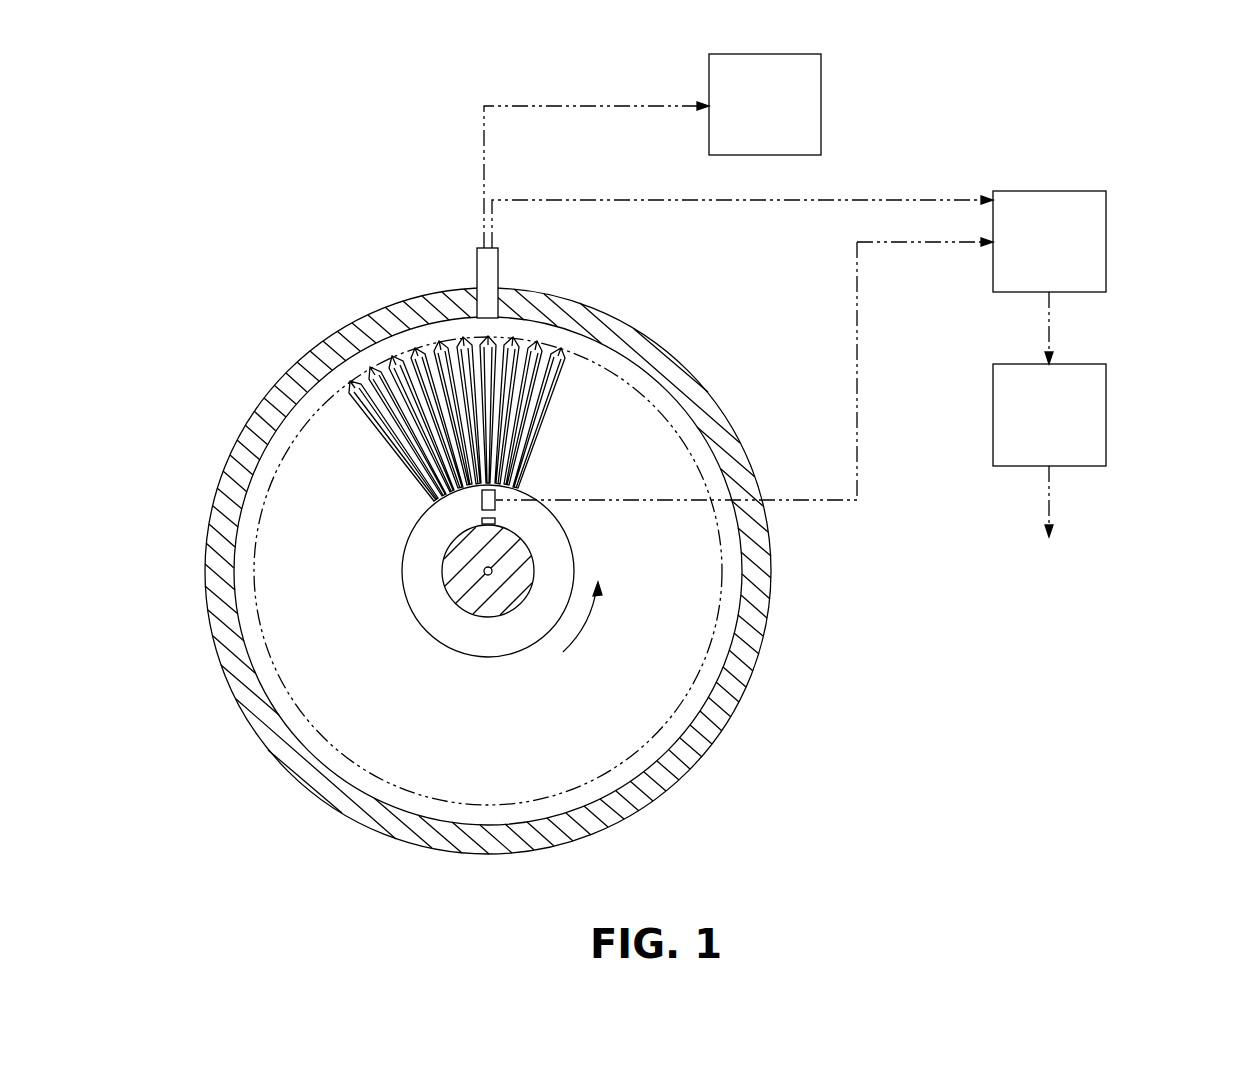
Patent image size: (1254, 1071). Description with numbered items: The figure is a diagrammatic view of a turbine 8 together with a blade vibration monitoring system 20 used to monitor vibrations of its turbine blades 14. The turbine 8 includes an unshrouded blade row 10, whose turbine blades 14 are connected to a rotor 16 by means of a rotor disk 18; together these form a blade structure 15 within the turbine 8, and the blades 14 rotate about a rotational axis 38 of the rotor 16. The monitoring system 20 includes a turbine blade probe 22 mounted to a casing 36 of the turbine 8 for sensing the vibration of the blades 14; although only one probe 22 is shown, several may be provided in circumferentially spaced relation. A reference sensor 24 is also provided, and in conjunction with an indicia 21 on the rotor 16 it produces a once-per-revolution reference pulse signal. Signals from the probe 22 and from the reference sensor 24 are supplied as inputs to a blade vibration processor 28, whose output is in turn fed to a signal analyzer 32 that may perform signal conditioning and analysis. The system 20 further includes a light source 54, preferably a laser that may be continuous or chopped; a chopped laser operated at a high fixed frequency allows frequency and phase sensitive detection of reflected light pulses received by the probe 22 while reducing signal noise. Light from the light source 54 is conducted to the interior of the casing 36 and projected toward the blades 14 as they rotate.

The turbine 8 is at (490, 571).
The unshrouded blade row 10 is at (300, 435).
The turbine blades 14 is at (430, 445).
The blade structure 15 is at (479, 548).
The rotor 16 is at (442, 578).
The rotor disk 18 is at (447, 645).
The turbine blade vibration monitoring system 20 is at (858, 295).
The indicia 21 is at (495, 521).
The turbine blade probe 22 is at (478, 280).
The reference sensor 24 is at (482, 500).
The blade vibration processor 28 is at (1067, 261).
The signal analyzer 32 is at (1067, 436).
The casing 36 is at (770, 620).
The rotational axis 38 is at (488, 575).
The light source 54 is at (784, 126).